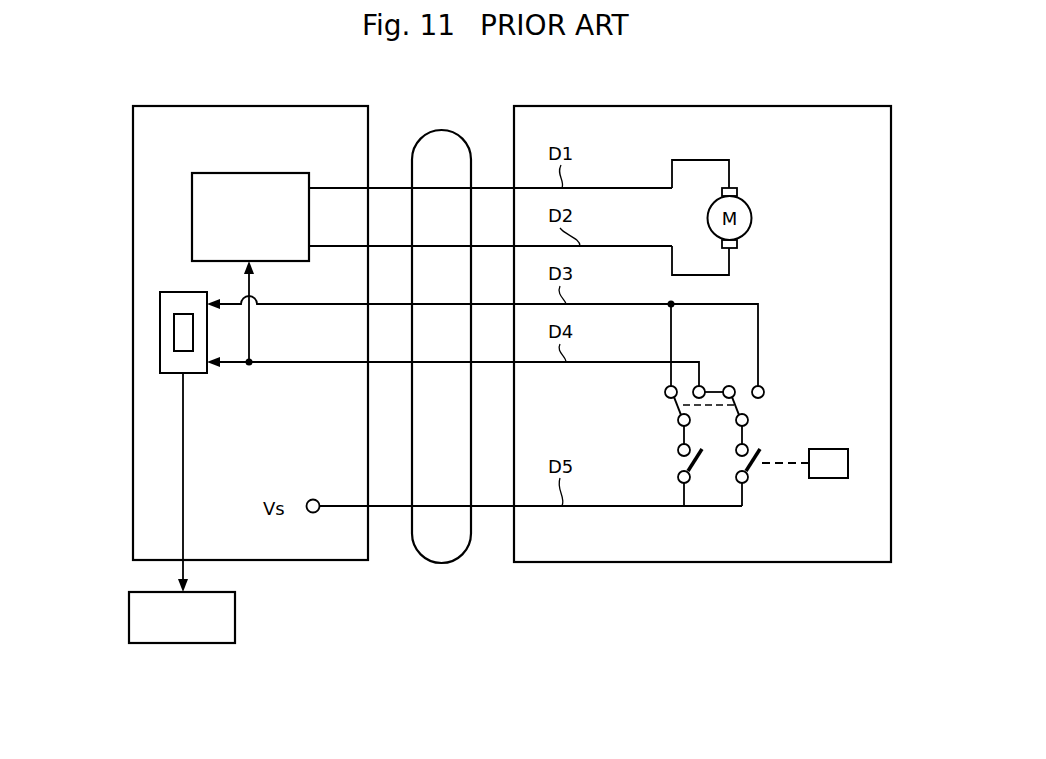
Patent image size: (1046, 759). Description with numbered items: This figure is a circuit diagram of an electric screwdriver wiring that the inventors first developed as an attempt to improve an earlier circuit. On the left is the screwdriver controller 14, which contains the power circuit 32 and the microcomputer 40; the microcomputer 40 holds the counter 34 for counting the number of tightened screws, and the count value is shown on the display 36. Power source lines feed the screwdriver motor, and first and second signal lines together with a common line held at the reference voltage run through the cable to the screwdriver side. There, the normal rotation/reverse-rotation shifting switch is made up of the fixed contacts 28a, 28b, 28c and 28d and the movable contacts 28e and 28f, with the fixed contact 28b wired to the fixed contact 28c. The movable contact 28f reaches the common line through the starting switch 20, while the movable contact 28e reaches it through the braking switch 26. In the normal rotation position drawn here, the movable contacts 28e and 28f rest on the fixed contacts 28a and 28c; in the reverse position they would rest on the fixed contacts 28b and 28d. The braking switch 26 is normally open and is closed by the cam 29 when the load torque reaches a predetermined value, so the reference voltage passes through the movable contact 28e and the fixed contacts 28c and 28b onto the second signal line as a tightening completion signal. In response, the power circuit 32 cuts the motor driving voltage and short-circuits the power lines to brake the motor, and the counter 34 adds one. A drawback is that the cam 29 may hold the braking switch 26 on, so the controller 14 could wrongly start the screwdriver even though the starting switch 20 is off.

The screwdriver controller 14 is at (328, 106).
The power circuit 32 is at (290, 173).
The counter 34 is at (174, 340).
The microcomputer 40 is at (196, 373).
The display 36 is at (235, 618).
The starting switch 20 is at (678, 465).
The braking switch 26 is at (757, 470).
The cam 29 is at (840, 478).
The fixed contact 28a is at (664, 392).
The fixed contact 28b is at (699, 386).
The fixed contact 28c is at (729, 386).
The fixed contact 28d is at (764, 392).
The movable contact 28e is at (748, 421).
The movable contact 28f is at (678, 422).